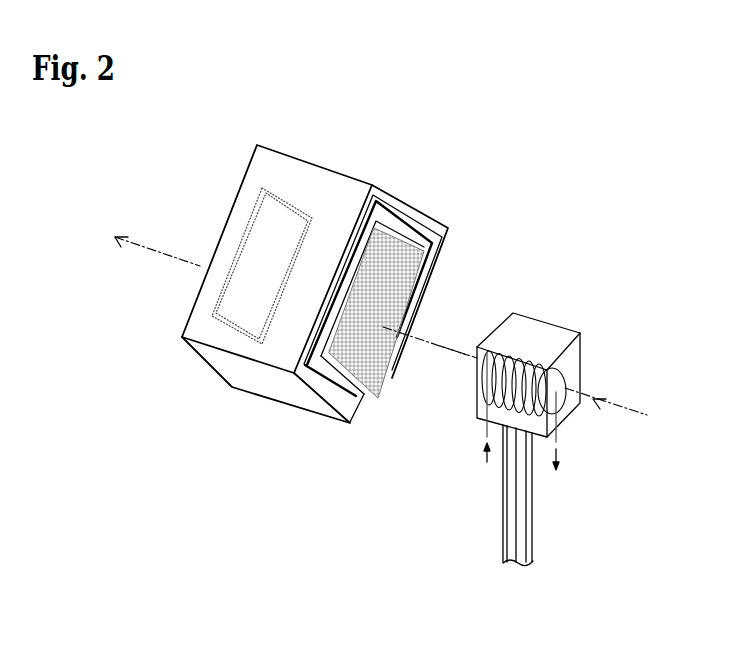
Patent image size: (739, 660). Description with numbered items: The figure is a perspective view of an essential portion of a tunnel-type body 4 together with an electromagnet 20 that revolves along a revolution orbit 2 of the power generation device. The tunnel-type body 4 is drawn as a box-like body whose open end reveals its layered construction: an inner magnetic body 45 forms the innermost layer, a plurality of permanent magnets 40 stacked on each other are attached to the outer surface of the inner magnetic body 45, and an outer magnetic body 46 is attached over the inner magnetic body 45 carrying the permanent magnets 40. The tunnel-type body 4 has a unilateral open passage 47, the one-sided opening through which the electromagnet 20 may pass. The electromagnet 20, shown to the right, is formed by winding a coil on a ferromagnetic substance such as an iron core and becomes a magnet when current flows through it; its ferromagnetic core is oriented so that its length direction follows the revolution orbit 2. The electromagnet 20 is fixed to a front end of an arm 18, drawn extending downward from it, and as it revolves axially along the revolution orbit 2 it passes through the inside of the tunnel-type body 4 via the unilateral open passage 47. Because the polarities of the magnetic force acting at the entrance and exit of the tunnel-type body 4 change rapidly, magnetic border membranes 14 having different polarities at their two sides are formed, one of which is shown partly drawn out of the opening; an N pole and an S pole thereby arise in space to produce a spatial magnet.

The revolution orbit 2 is at (633, 412).
The tunnel-type body 4 is at (358, 148).
The magnetic border membrane 14 is at (255, 247).
The arm 18 is at (535, 518).
The electromagnet 20 is at (545, 332).
The permanent magnet 40 is at (407, 221).
The inner magnetic body 45 is at (387, 222).
The outer magnetic body 46 is at (297, 176).
The unilateral open passage 47 is at (372, 410).